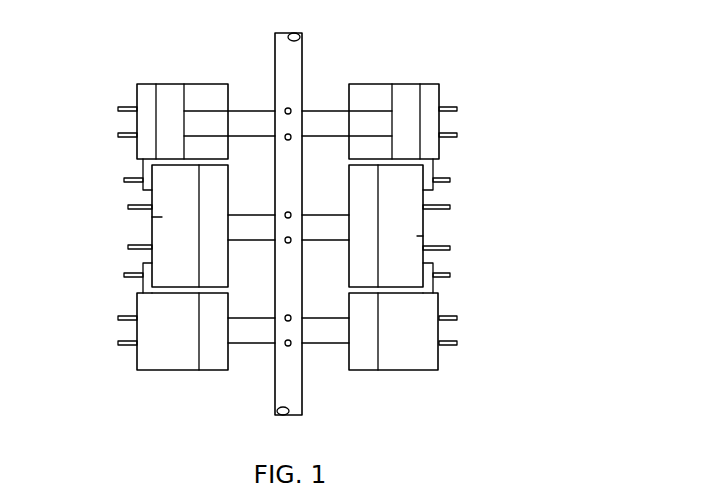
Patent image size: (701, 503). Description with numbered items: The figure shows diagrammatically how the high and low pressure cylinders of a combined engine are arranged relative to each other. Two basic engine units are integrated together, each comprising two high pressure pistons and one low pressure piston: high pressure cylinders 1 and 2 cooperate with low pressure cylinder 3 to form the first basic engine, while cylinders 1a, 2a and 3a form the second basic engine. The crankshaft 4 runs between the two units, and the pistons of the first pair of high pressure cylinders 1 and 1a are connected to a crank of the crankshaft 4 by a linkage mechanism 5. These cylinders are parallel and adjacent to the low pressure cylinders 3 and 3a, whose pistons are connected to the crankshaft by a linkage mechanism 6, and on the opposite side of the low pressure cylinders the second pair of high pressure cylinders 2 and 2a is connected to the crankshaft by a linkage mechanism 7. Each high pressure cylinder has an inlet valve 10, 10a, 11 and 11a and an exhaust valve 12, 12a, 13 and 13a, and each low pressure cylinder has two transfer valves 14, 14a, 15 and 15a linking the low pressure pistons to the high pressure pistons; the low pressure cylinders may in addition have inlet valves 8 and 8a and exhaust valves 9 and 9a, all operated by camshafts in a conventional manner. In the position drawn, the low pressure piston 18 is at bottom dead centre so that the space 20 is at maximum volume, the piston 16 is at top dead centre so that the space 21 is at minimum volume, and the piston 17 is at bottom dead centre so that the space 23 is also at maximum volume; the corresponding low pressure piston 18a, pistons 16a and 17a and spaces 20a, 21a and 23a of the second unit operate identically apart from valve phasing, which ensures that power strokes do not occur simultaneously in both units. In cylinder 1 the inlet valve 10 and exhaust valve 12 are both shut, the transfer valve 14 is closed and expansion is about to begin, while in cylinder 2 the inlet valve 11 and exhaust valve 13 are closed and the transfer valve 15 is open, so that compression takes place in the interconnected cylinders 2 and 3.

The high pressure cylinder 1 is at (146, 84).
The high pressure cylinder 1a is at (427, 83).
The high pressure cylinder 2 is at (158, 372).
The high pressure cylinder 2a is at (432, 372).
The low pressure cylinder 3 is at (150, 224).
The low pressure cylinder 3a is at (423, 228).
The crankshaft 4 is at (298, 52).
The linkage mechanism 5 is at (317, 118).
The linkage mechanism 6 is at (312, 230).
The linkage mechanism 7 is at (262, 317).
The inlet valve 8 is at (128, 207).
The inlet valve 8a is at (450, 207).
The exhaust valve 9 is at (128, 248).
The exhaust valve 9a is at (450, 248).
The inlet valve 10 is at (118, 135).
The inlet valve 10a is at (457, 135).
The inlet valve 11 is at (118, 319).
The inlet valve 11a is at (457, 318).
The exhaust valve 12 is at (118, 108).
The exhaust valve 12a is at (457, 108).
The exhaust valve 13 is at (118, 345).
The exhaust valve 13a is at (457, 345).
The transfer valve 14 is at (124, 180).
The transfer valve 14a is at (450, 180).
The transfer valve 15 is at (124, 275).
The transfer valve 15a is at (450, 275).
The piston 16 is at (171, 91).
The piston 16a is at (410, 93).
The piston 17 is at (211, 365).
The piston 17a is at (364, 360).
The low pressure piston 18 is at (215, 193).
The low pressure piston 18a is at (358, 195).
The space 20 is at (152, 217).
The space 20a is at (417, 236).
The space 21 is at (145, 93).
The space 21a is at (432, 95).
The space 23 is at (152, 355).
The space 23a is at (392, 362).